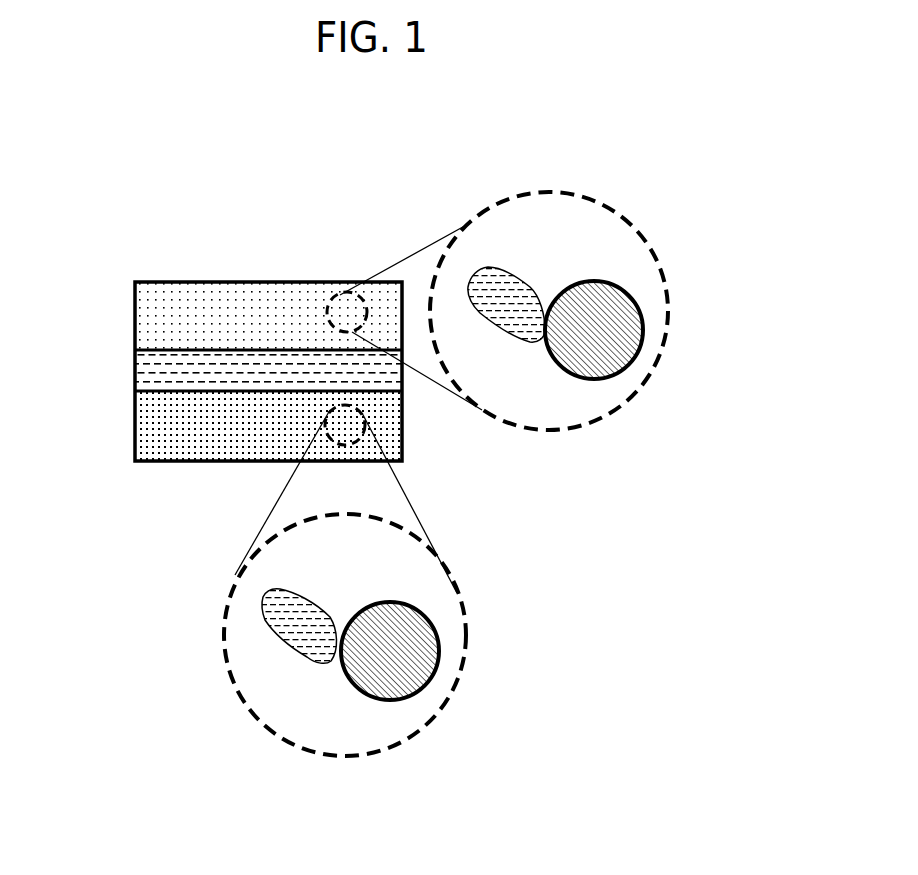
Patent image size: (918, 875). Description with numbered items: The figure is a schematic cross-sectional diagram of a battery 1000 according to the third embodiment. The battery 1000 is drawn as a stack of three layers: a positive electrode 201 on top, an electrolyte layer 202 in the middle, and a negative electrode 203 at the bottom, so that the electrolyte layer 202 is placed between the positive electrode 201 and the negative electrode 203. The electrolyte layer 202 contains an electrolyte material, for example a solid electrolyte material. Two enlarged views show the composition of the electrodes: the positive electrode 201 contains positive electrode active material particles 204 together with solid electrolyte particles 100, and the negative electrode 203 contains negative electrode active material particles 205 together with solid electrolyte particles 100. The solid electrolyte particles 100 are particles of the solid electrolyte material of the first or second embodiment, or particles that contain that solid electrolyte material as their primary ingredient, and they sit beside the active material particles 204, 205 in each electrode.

The battery 1000 is at (297, 232).
The positive electrode 201 is at (167, 302).
The electrolyte layer 202 is at (167, 367).
The negative electrode 203 is at (167, 425).
The solid electrolyte particles 100 is at (520, 322).
The positive electrode active material particles 204 is at (608, 329).
The negative electrode active material particles 205 is at (403, 643).